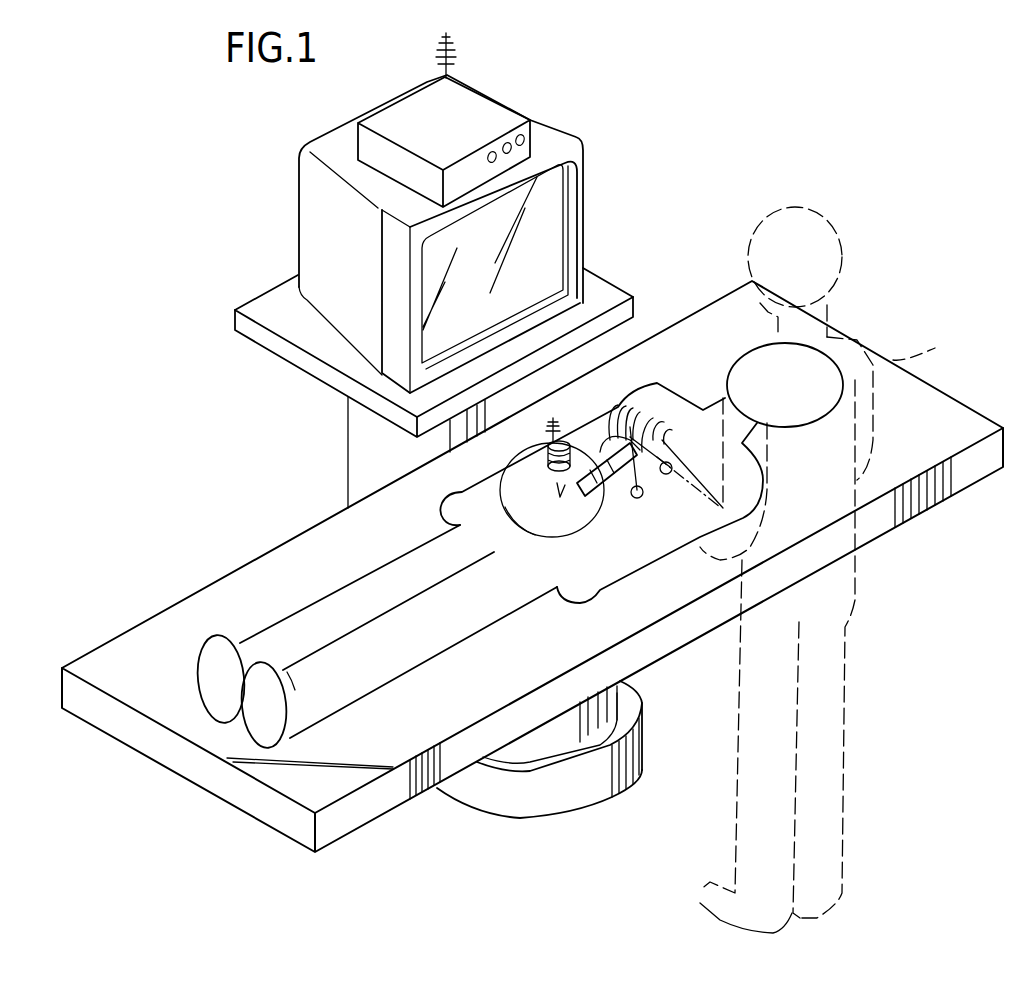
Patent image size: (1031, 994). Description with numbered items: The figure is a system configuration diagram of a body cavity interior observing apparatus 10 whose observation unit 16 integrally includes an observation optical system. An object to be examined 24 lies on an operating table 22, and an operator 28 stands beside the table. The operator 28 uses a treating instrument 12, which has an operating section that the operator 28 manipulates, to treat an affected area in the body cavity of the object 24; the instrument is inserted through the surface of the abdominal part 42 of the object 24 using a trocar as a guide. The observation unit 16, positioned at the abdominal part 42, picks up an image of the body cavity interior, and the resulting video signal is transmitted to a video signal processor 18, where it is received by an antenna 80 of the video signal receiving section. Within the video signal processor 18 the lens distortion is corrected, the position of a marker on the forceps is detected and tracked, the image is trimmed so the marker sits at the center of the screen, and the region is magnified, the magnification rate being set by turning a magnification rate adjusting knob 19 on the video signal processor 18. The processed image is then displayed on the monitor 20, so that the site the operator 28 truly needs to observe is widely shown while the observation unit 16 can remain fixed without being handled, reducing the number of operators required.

The body cavity interior observing apparatus 10 is at (713, 187).
The treating instrument 12 is at (627, 477).
The observation unit 16 is at (560, 483).
The video signal processor 18 is at (485, 92).
The magnification rate adjusting knob 19 is at (492, 155).
The monitor 20 is at (575, 213).
The operating table 22 is at (967, 427).
The object to be examined 24 is at (672, 343).
The operator 28 is at (935, 348).
The abdominal part 42 is at (573, 520).
The antenna 80 is at (453, 47).